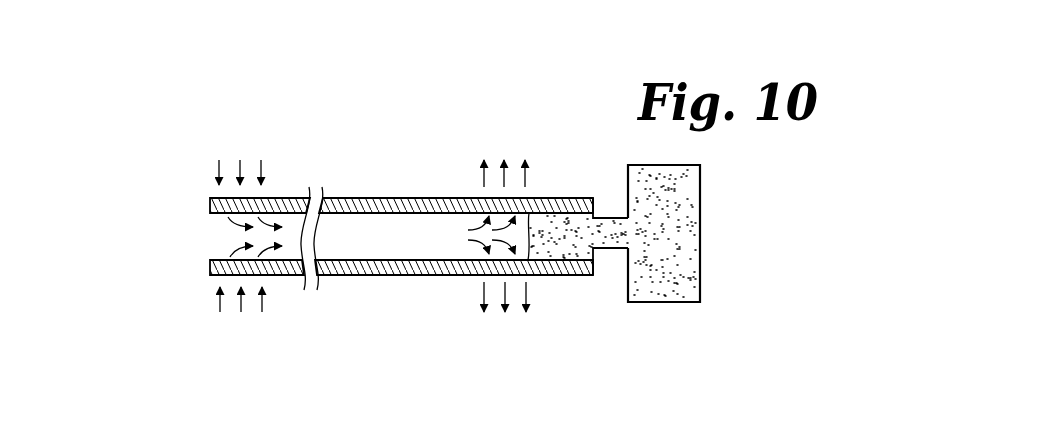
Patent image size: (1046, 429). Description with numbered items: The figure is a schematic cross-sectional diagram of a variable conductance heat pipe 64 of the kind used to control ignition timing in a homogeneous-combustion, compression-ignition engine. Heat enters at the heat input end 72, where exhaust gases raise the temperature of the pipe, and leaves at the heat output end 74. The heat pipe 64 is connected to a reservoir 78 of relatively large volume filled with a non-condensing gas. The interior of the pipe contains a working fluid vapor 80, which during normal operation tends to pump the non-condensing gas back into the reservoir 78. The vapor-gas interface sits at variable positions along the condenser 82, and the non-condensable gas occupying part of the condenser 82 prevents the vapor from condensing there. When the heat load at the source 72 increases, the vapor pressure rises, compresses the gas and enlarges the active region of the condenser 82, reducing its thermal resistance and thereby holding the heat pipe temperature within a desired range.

The variable conductance heat pipe 64 is at (374, 235).
The heat input end 72 is at (210, 270).
The heat output end 74 is at (579, 275).
The reservoir 78 is at (690, 263).
The working fluid vapor 80 is at (368, 208).
The condenser 82 is at (395, 275).